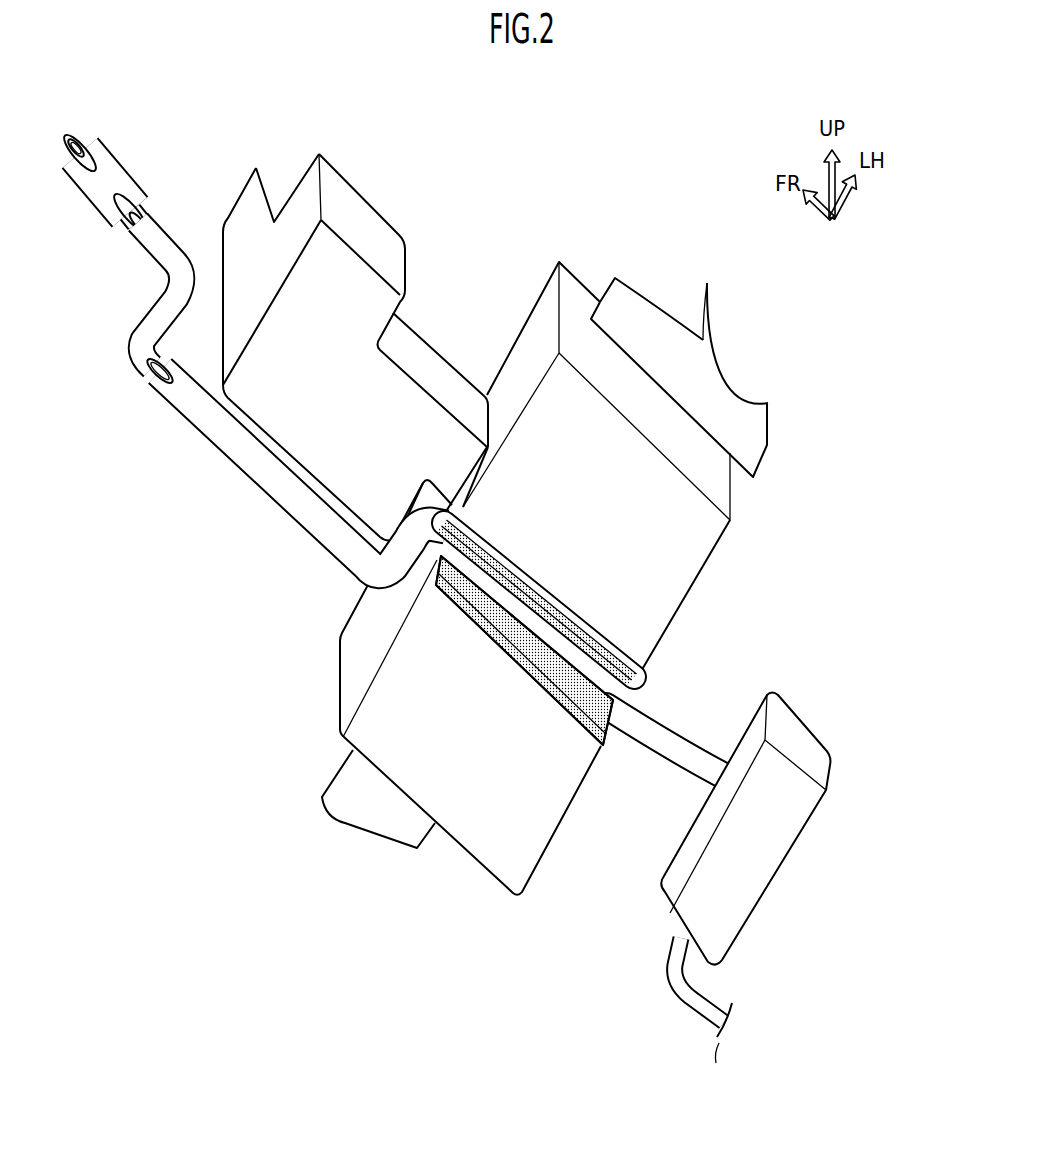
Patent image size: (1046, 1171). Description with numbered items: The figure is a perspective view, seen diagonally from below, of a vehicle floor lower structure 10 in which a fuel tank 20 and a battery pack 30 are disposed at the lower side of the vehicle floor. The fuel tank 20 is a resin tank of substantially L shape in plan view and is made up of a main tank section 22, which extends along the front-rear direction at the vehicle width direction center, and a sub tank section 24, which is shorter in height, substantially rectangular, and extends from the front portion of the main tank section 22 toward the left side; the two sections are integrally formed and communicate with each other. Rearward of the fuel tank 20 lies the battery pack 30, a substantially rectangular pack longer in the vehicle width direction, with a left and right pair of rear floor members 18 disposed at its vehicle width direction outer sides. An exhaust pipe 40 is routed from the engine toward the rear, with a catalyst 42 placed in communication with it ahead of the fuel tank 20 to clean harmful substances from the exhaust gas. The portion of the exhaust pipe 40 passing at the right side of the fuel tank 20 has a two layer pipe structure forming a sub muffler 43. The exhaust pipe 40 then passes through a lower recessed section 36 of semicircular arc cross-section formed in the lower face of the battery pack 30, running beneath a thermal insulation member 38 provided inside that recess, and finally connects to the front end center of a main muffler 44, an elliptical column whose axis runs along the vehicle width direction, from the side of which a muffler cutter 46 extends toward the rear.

The vehicle floor lower structure 10 is at (482, 244).
The rear floor members 18 is at (721, 363).
The fuel tank 20 is at (262, 172).
The main tank section 22 is at (243, 203).
The sub tank section 24 is at (358, 213).
The battery pack 30 is at (559, 254).
The lower recessed section 36 is at (440, 585).
The thermal insulation member 38 is at (545, 672).
The exhaust pipe 40 is at (134, 253).
The catalyst 42 is at (112, 172).
The sub muffler 43 is at (217, 450).
The main muffler 44 is at (800, 741).
The muffler cutter 46 is at (685, 1010).